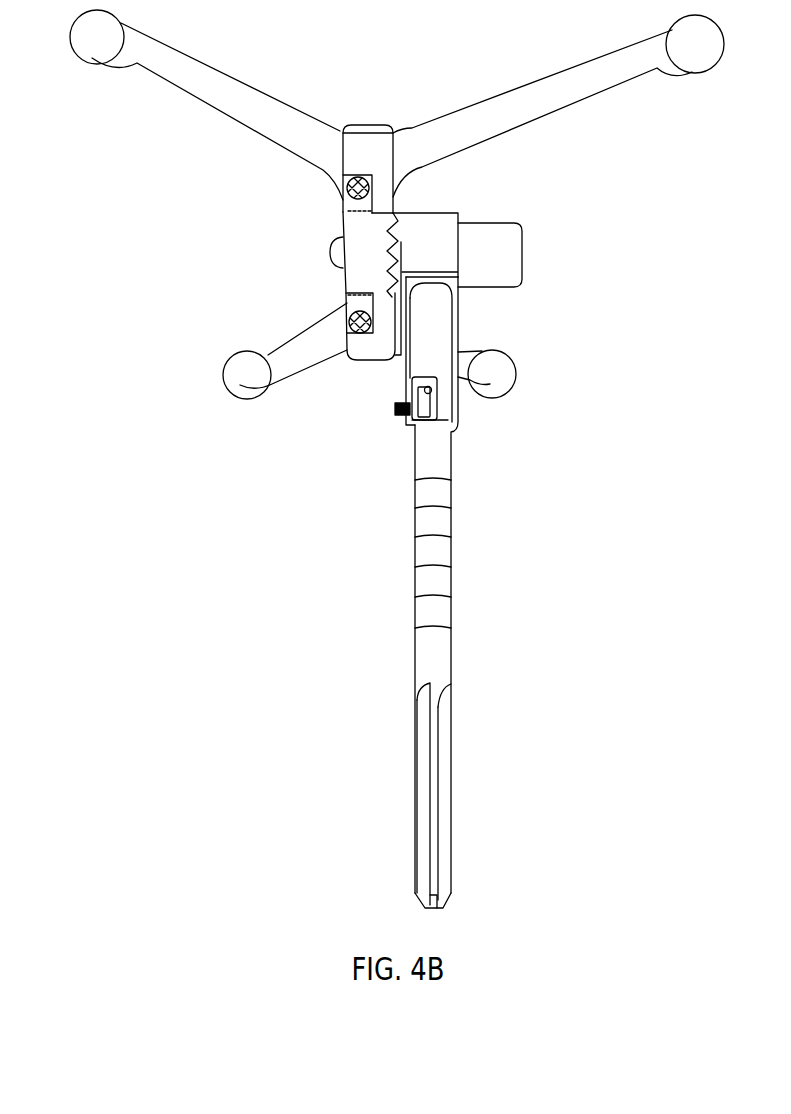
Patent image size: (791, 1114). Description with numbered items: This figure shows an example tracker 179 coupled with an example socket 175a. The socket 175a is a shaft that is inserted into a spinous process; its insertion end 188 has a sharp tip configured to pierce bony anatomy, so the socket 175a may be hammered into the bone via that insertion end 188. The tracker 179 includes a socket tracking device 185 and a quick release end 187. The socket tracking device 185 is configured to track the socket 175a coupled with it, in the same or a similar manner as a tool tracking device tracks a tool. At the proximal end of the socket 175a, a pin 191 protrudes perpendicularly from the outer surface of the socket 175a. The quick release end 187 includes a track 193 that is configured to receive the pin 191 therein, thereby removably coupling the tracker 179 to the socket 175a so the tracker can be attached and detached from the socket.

The tracker 179 is at (397, 459).
The socket tracking device 185 is at (513, 108).
The quick release end 187 is at (388, 395).
The pin 191 is at (433, 392).
The track 193 is at (398, 408).
The socket 175a is at (443, 523).
The insertion end 188 is at (392, 781).